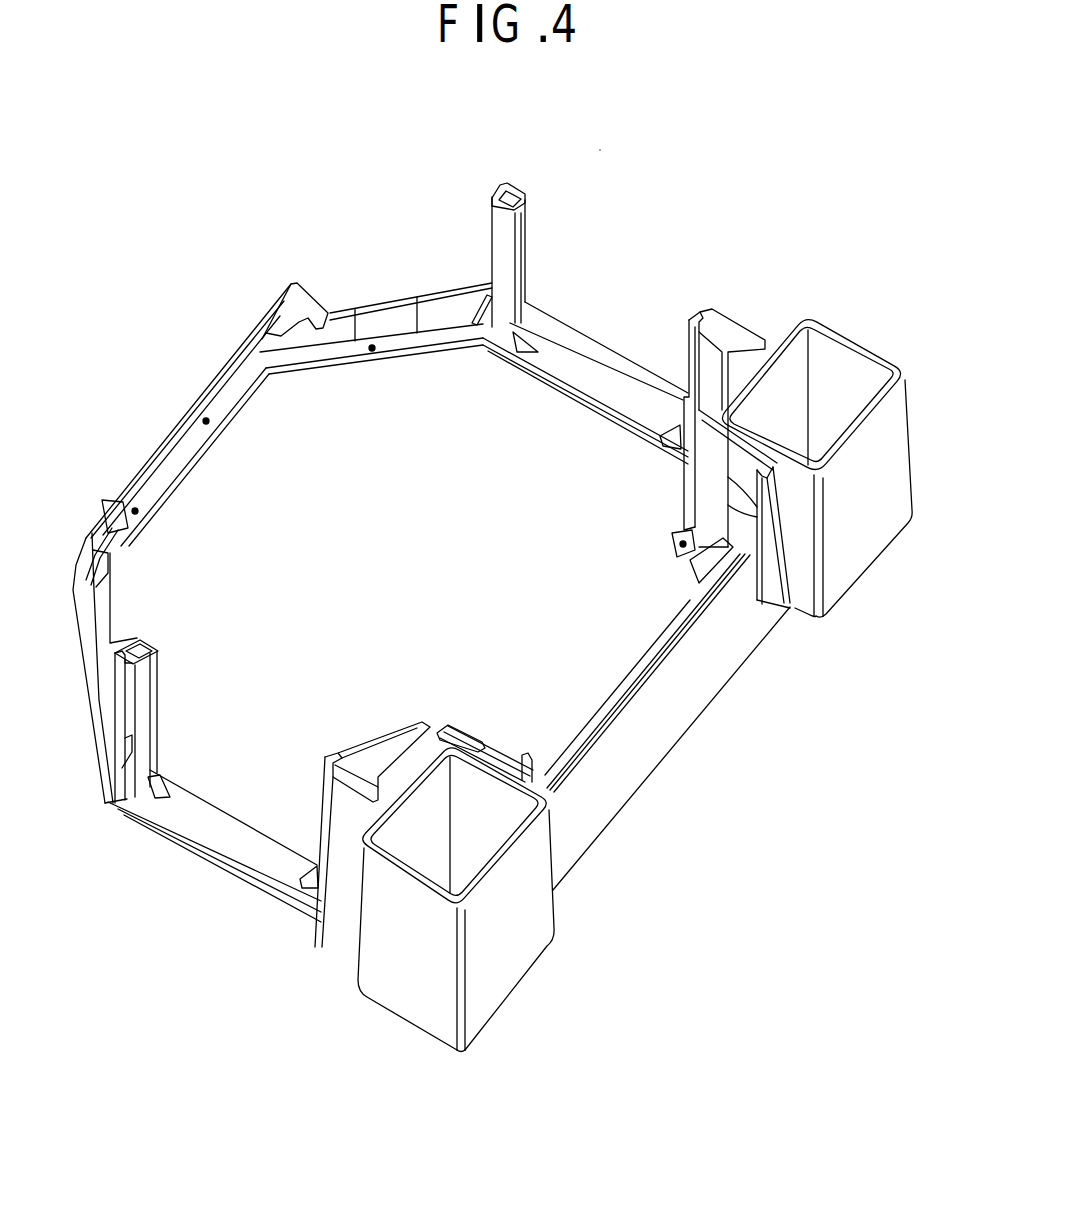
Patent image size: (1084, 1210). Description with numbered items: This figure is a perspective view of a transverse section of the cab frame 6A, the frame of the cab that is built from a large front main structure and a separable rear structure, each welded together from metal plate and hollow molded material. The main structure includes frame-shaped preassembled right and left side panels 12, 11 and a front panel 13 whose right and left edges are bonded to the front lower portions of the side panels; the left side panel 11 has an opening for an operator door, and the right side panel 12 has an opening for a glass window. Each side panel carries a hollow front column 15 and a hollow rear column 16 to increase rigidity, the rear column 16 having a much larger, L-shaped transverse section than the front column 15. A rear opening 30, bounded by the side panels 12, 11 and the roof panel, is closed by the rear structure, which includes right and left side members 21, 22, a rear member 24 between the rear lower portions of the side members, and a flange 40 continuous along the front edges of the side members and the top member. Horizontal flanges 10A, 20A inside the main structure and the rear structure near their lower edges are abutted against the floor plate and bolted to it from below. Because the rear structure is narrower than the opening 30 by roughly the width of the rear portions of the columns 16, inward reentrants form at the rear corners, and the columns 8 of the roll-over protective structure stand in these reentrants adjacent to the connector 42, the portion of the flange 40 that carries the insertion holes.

The cab frame 6A is at (651, 140).
The column 8 is at (893, 462).
The horizontal flange 10A is at (312, 360).
The left side panel 11 is at (222, 826).
The right side panel 12 is at (590, 350).
The front panel 13 is at (178, 417).
The front column 15 is at (521, 240).
The rear column 16 is at (733, 327).
The horizontal flange 20A is at (691, 553).
The right side member 21 is at (490, 766).
The left side member 22 is at (742, 462).
The rear member 24 is at (690, 700).
The rear opening 30 is at (565, 633).
The flange 40 is at (486, 707).
The connector 42 is at (458, 735).